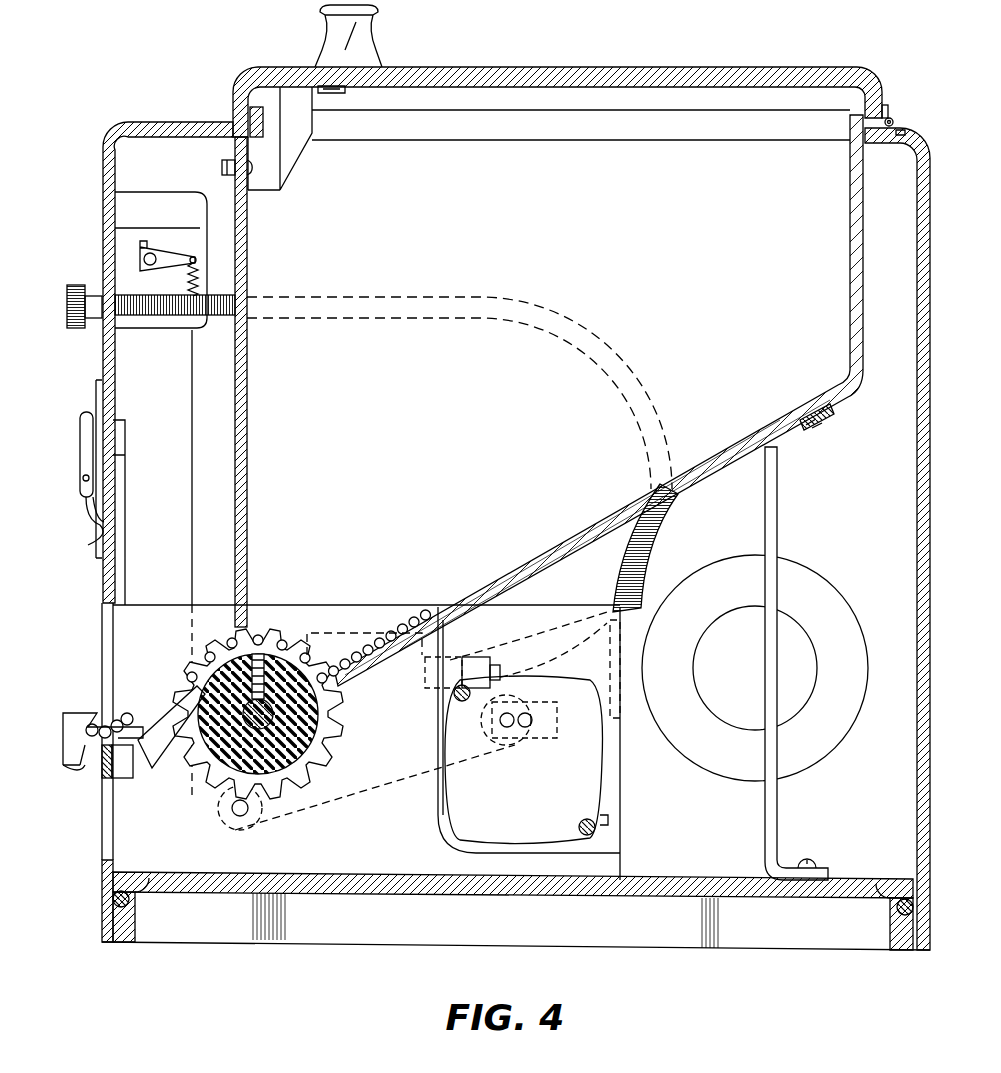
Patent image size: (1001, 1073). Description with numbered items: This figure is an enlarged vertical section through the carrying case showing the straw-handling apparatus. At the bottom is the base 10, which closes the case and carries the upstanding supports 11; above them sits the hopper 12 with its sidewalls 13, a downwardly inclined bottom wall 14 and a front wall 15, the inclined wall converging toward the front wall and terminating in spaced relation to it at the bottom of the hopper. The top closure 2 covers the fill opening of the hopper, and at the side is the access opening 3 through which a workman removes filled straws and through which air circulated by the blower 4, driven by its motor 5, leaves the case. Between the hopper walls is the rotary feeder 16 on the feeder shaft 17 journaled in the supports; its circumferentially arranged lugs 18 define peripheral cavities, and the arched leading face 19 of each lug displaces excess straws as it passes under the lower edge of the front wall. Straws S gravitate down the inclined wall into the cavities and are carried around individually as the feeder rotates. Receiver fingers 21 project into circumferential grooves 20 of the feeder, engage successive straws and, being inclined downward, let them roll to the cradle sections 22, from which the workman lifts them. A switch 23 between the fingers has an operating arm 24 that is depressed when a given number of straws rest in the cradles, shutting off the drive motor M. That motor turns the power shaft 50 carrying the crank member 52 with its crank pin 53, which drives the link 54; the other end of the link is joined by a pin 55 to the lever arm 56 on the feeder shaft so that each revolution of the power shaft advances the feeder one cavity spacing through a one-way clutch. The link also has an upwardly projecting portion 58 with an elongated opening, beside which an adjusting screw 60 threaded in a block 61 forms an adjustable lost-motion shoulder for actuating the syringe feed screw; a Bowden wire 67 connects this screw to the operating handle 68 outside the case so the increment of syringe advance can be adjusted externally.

The top closure 2 is at (498, 72).
The access opening 3 is at (112, 648).
The blower 4 is at (825, 578).
The motor 5 is at (800, 640).
The base 10 is at (293, 890).
The upstanding supports 11 is at (105, 850).
The hopper 12 is at (850, 395).
The hopper sidewalls 13 is at (548, 288).
The inclined bottom wall 14 is at (553, 558).
The front wall 15 is at (250, 437).
The rotary feeder 16 is at (342, 742).
The feeder shaft 17 is at (317, 716).
The lugs 18 is at (313, 760).
The leading face 19 is at (193, 663).
The circumferential grooves 20 is at (227, 647).
The receiver fingers 21 is at (82, 766).
The cradle sections 22 is at (72, 716).
The switch 23 is at (126, 779).
The operating arm 24 is at (145, 713).
The power shaft 50 is at (525, 728).
The crank member 52 is at (560, 730).
The crank pin 53 is at (505, 728).
The link 54 is at (390, 787).
The pin 55 is at (240, 814).
The lever arm 56 is at (268, 790).
The upwardly projecting portion 58 is at (327, 632).
The adjusting screw 60 is at (516, 650).
The block 61 is at (548, 651).
The Bowden wire 67 is at (670, 536).
The operating handle 68 is at (78, 285).
The straws S is at (232, 640).
The drive motor M is at (596, 787).